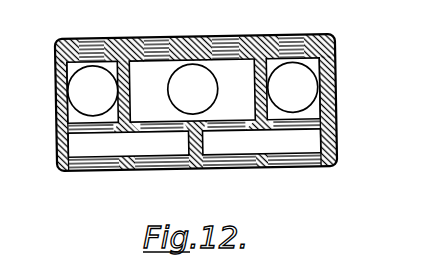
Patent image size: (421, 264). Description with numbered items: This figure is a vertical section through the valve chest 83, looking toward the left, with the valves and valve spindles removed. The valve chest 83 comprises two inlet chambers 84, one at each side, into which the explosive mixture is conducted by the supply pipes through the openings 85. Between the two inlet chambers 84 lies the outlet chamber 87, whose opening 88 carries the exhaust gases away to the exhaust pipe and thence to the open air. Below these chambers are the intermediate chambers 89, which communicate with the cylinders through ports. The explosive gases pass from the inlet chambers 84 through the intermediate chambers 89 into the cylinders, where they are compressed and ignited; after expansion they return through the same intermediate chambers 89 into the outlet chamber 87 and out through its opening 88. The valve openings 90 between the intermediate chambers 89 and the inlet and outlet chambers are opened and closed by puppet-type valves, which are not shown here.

The valve chest 83 is at (54, 47).
The inlet chamber 84 is at (72, 115).
The opening 85 is at (194, 90).
The outlet chamber 87 is at (192, 90).
The opening 88 is at (192, 89).
The intermediate chamber 89 is at (130, 146).
The valve opening 90 is at (98, 125).